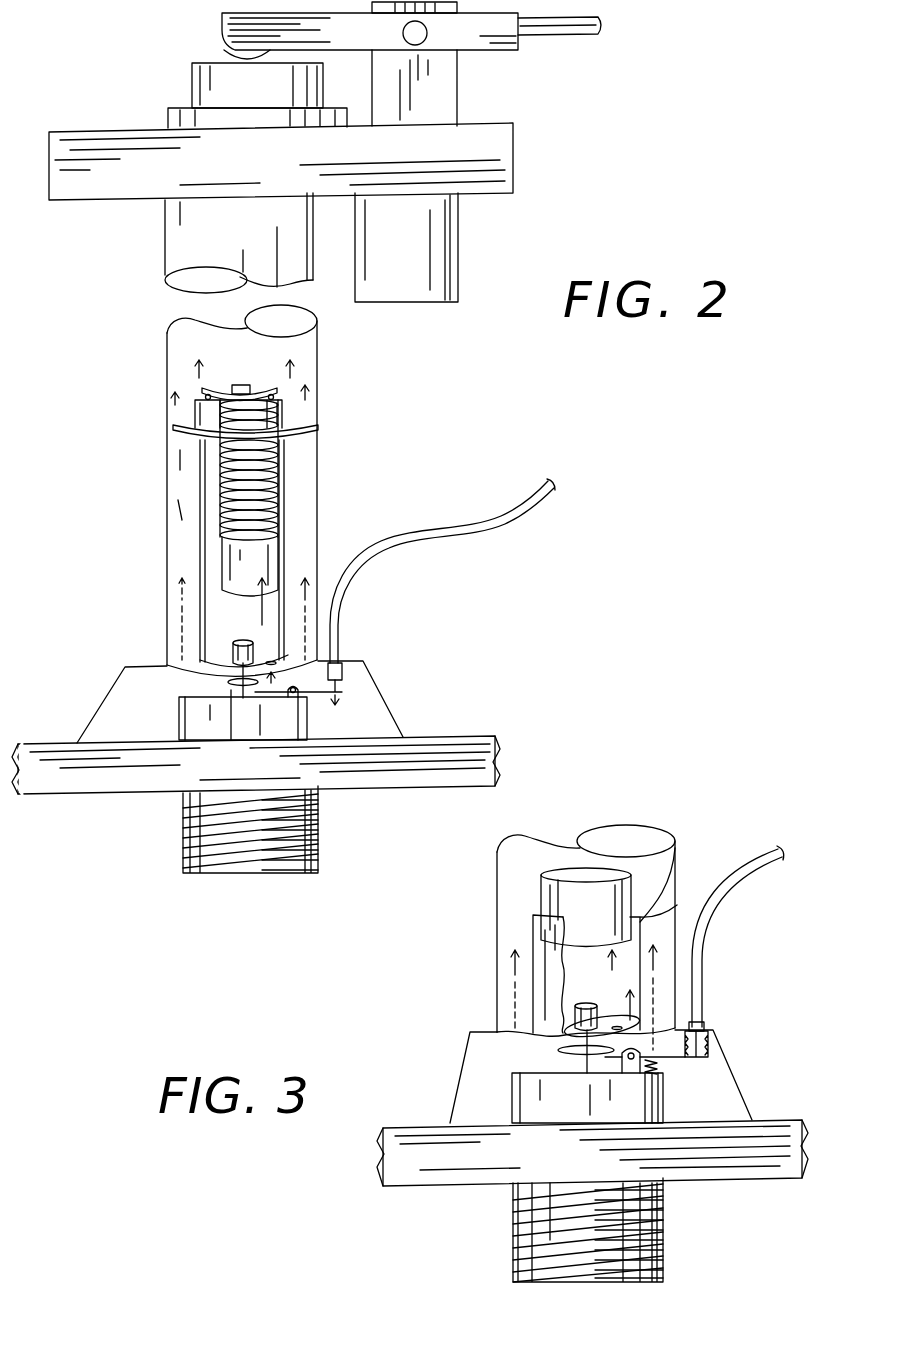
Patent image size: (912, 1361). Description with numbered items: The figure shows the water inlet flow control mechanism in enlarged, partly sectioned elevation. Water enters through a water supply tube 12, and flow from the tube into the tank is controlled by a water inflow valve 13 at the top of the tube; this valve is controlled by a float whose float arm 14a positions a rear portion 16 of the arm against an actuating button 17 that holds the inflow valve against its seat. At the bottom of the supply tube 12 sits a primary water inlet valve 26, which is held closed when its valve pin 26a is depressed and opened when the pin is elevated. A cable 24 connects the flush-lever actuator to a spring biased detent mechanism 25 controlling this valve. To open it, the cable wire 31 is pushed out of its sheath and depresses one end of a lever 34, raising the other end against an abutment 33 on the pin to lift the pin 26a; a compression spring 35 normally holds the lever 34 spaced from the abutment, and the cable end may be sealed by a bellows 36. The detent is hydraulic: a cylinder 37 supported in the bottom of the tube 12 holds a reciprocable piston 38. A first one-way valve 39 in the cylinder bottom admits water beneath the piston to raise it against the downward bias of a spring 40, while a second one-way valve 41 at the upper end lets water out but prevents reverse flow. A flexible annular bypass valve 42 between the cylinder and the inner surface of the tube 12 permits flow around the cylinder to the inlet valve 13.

In FIG. 2, the water supply tube 12 is at (320, 360).
In FIG. 3, the water supply tube 12 is at (497, 895).
In FIG. 2, the water inflow valve 13 is at (48, 132).
In FIG. 2, the float arm 14a is at (594, 36).
In FIG. 2, the rear portion of the float arm 16 is at (222, 40).
In FIG. 2, the actuating button 17 is at (193, 95).
In FIG. 2, the cable 24 is at (498, 527).
In FIG. 3, the cable 24 is at (750, 873).
In FIG. 2, the detent mechanism 25 is at (150, 620).
In FIG. 3, the detent mechanism 25 is at (468, 1015).
In FIG. 2, the primary water inlet valve 26 is at (147, 725).
In FIG. 3, the primary water inlet valve 26 is at (480, 1088).
In FIG. 2, the valve pin 26a is at (238, 668).
In FIG. 3, the valve pin 26a is at (582, 1068).
In FIG. 2, the cable wire 31 is at (342, 683).
In FIG. 3, the cable wire 31 is at (706, 1040).
In FIG. 2, the abutment 33 is at (233, 687).
In FIG. 3, the abutment 33 is at (578, 1062).
In FIG. 2, the lever 34 is at (320, 722).
In FIG. 3, the lever 34 is at (673, 1058).
In FIG. 3, the compression spring 35 is at (656, 1066).
In FIG. 3, the bellows 36 is at (712, 1050).
In FIG. 2, the cylinder 37 is at (200, 545).
In FIG. 3, the cylinder 37 is at (680, 908).
In FIG. 2, the piston 38 is at (280, 560).
In FIG. 3, the piston 38 is at (640, 878).
In FIG. 2, the first one way valve 39 is at (265, 650).
In FIG. 3, the first one way valve 39 is at (590, 1004).
In FIG. 2, the spring 40 is at (278, 495).
In FIG. 2, the second one way valve 41 is at (265, 388).
In FIG. 2, the flexible annular bypass valve 42 is at (320, 426).